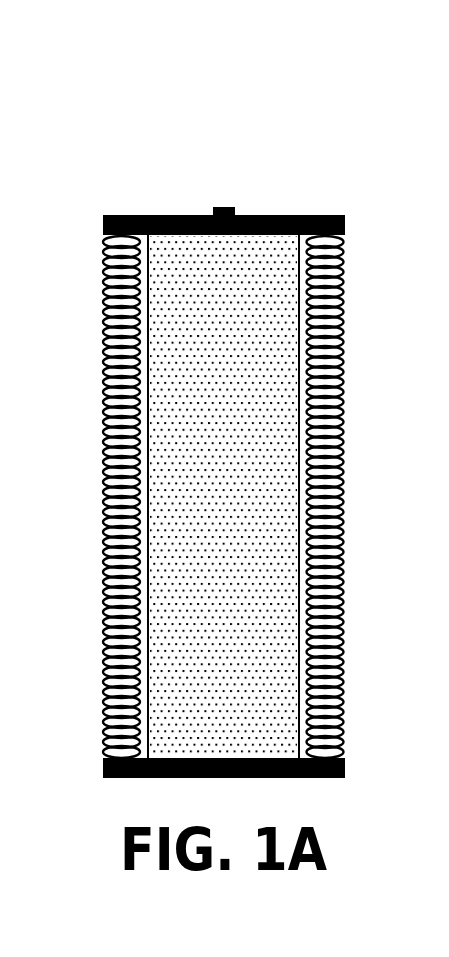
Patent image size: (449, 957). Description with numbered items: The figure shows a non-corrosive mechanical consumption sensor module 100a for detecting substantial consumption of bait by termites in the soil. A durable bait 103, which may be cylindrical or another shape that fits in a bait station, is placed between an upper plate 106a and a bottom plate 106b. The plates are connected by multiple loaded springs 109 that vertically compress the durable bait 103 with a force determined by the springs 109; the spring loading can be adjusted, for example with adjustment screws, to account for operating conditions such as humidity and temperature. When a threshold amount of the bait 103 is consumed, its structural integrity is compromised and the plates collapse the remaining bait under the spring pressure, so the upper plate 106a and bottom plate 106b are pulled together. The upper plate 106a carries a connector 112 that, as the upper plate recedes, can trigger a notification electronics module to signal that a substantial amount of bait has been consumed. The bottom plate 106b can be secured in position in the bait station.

The non-corrosive mechanical consumption sensor module 100a is at (210, 96).
The durable bait 103 is at (243, 516).
The upper plate 106a is at (177, 215).
The bottom plate 106b is at (325, 778).
The loaded springs 109 is at (102, 552).
The connector 112 is at (223, 207).